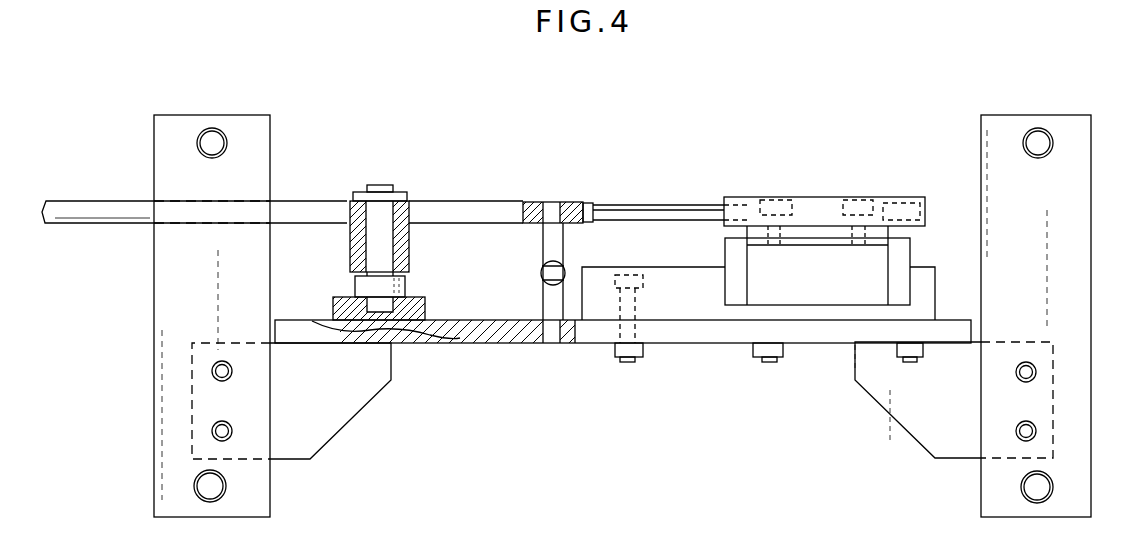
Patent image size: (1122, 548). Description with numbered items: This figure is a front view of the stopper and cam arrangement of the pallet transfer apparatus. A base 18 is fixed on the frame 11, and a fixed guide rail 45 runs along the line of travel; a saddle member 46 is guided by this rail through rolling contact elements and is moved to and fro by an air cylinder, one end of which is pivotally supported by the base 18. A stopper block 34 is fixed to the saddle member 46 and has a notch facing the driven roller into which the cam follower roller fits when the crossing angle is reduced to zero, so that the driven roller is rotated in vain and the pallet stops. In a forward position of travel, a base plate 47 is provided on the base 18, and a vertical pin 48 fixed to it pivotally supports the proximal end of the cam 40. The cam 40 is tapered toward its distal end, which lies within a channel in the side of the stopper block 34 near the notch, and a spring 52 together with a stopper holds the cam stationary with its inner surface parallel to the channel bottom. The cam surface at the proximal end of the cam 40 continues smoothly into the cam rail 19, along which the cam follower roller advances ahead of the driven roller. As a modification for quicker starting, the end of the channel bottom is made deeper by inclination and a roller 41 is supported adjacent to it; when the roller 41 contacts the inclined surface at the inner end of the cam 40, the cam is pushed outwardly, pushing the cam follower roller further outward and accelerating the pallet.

The frame 11 is at (165, 290).
The base 18 is at (437, 346).
The cam rail 19 is at (104, 212).
The stopper block 34 is at (825, 197).
The cam 40 is at (510, 210).
The roller 41 is at (906, 210).
The fixed guide rail 45 is at (690, 280).
The saddle member 46 is at (816, 296).
The base plate 47 is at (418, 311).
The vertical pin 48 is at (382, 220).
The spring 52 is at (542, 284).